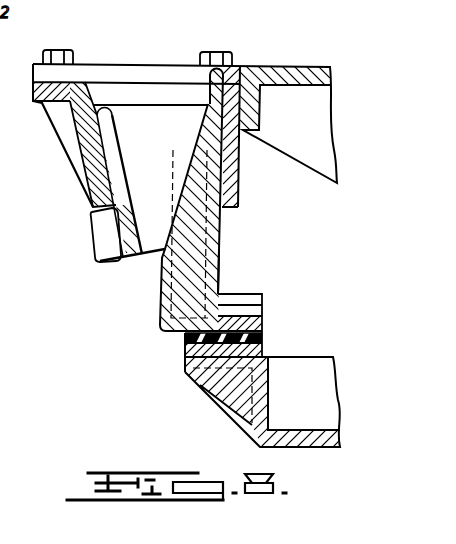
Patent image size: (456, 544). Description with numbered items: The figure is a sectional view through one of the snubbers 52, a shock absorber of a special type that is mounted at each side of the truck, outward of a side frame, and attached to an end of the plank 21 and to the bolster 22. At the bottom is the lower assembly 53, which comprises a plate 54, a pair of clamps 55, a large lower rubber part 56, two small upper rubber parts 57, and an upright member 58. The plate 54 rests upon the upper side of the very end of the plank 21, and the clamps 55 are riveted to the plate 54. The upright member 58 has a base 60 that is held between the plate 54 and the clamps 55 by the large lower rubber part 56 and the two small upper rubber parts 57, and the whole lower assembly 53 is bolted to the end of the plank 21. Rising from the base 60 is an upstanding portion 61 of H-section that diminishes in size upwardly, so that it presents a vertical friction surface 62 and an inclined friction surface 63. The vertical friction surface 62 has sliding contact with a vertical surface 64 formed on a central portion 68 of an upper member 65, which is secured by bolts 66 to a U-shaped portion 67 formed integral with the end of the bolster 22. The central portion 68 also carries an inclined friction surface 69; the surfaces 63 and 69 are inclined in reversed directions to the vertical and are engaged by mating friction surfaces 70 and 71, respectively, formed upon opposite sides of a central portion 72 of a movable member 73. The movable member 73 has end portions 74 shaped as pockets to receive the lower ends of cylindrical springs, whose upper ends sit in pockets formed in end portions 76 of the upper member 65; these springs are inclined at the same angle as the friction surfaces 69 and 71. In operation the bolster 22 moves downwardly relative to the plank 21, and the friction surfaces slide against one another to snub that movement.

The plank 21 is at (333, 357).
The bolster 22 is at (292, 67).
The snubber 52 is at (107, 283).
The lower assembly 53 is at (232, 243).
The plate 54 is at (262, 351).
The clamps 55 is at (262, 294).
The large lower rubber part 56 is at (262, 341).
The small upper rubber parts 57 is at (262, 308).
The upright member 58 is at (222, 259).
The base 60 is at (262, 328).
The upstanding portion 61 is at (160, 293).
The vertical friction surface 62 is at (239, 203).
The inclined friction surface 63 is at (188, 167).
The vertical surface 64 is at (223, 165).
The upper member 65 is at (65, 152).
The bolts 66 is at (200, 56).
The U-shaped portion 67 is at (32, 63).
The central portion 68 is at (75, 100).
The inclined friction surface 69 is at (106, 157).
The mating friction surface 70 is at (184, 183).
The mating friction surface 71 is at (84, 196).
The central portion 72 is at (118, 176).
The movable member 73 is at (100, 259).
The end portions 74 is at (100, 228).
The end portions 76 is at (62, 127).